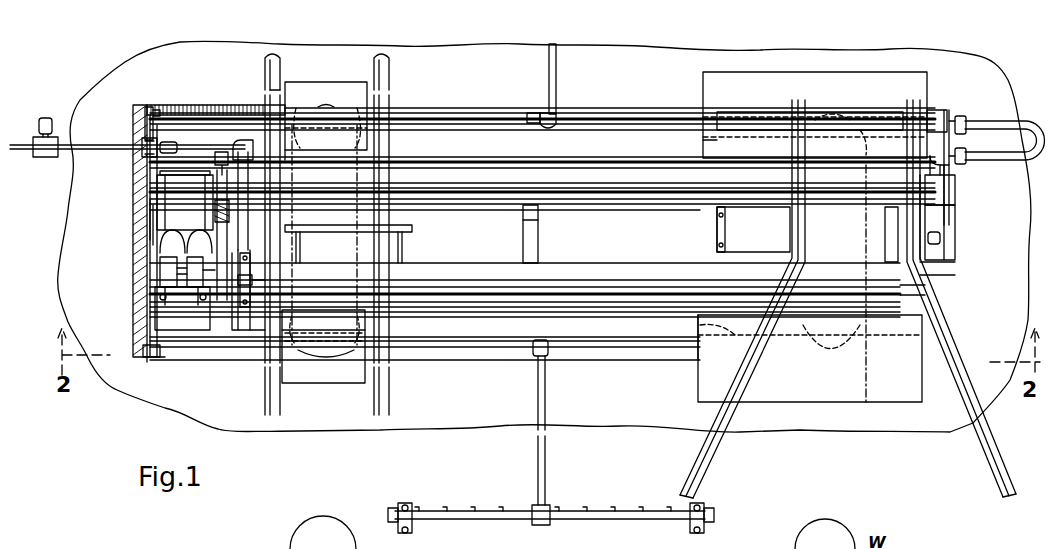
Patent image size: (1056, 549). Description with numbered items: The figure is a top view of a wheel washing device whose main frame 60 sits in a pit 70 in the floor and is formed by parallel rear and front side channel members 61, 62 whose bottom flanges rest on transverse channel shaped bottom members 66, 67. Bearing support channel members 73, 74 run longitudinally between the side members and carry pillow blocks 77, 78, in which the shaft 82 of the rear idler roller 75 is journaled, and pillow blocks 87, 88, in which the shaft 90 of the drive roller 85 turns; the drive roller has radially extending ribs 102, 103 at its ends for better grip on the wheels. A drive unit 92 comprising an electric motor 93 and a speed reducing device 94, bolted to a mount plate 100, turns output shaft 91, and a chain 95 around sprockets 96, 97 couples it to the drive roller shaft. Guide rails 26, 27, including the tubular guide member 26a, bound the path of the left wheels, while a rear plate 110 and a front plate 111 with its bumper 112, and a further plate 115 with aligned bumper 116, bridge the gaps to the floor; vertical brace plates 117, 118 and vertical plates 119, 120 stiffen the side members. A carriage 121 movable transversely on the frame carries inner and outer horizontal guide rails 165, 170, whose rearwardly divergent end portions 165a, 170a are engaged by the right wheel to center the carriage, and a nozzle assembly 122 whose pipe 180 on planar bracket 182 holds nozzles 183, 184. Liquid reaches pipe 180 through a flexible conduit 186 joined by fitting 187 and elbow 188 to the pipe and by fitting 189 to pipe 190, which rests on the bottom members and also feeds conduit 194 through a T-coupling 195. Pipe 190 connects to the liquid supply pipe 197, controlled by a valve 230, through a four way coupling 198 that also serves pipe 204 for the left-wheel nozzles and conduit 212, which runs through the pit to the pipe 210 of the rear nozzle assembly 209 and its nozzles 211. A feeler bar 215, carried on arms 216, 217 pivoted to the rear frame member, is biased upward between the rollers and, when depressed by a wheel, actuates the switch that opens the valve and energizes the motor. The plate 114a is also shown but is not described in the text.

The guide rail 26 is at (264, 392).
The tubular guide member 26a is at (390, 213).
The guide rail 27 is at (383, 395).
The main frame 60 is at (604, 132).
The rear side channel member 61 is at (604, 332).
The front side channel member 62 is at (470, 126).
The transverse channel shaped bottom member 66 is at (143, 363).
The transverse channel shaped bottom member 67 is at (527, 127).
The pit 70 is at (676, 360).
The bearing support channel member 73 is at (240, 142).
The bearing support channel member 74 is at (947, 263).
The rear idler roller 75 is at (590, 264).
The pillow block 77 is at (236, 296).
The pillow block 78 is at (930, 292).
The shaft of the idler roller 82 is at (255, 280).
The drive roller 85 is at (583, 203).
The pillow block 87 is at (262, 138).
The pillow block 88 is at (944, 173).
The shaft of the drive roller 90 is at (255, 204).
The output shaft 91 is at (215, 252).
The drive unit 92 is at (155, 225).
The electric motor 93 is at (160, 190).
The speed reducing device 94 is at (160, 272).
The chain 95 is at (208, 215).
The sprocket 96 is at (212, 305).
The sprocket 97 is at (215, 170).
The mount plate 100 is at (157, 313).
The rib 102 is at (372, 186).
The rib 103 is at (728, 183).
The rear plate 110 is at (322, 378).
The front plate 111 is at (336, 70).
The bumper 112 is at (285, 110).
The roller housing 114a is at (854, 392).
The plate 115 is at (866, 64).
The bumper 116 is at (758, 112).
The vertical brace plate 117 is at (370, 327).
The vertical brace plate 118 is at (700, 326).
The vertical plate 119 is at (380, 136).
The vertical plate 120 is at (703, 141).
The carriage 121 is at (705, 245).
The nozzle assembly 122 is at (948, 209).
The inner horizontal guide rail 165 is at (806, 243).
The rearwardly divergent end portion 165a is at (680, 464).
The outer horizontal guide rail 170 is at (922, 102).
The rearwardly divergent end portion 170a is at (978, 462).
The pipe 180 is at (960, 195).
The planar bracket 182 is at (950, 222).
The nozzle 183 is at (950, 190).
The nozzle 184 is at (942, 244).
The flexible conduit 186 is at (1048, 116).
The fitting 187 is at (970, 150).
The elbow 188 is at (952, 144).
The fitting 189 is at (962, 114).
The pipe 190 is at (675, 100).
The conduit 194 is at (556, 72).
The T-coupling 195 is at (542, 128).
The liquid supply pipe 197 is at (98, 137).
The four way coupling 198 is at (140, 146).
The pipe 204 is at (200, 114).
The rear nozzle assembly 209 is at (518, 497).
The pipe 210 is at (428, 510).
The nozzles 211 is at (638, 511).
The conduit 212 is at (150, 214).
The feeler bar 215 is at (413, 229).
The arm 216 is at (404, 254).
The arm 217 is at (303, 252).
The valve 230 is at (40, 157).